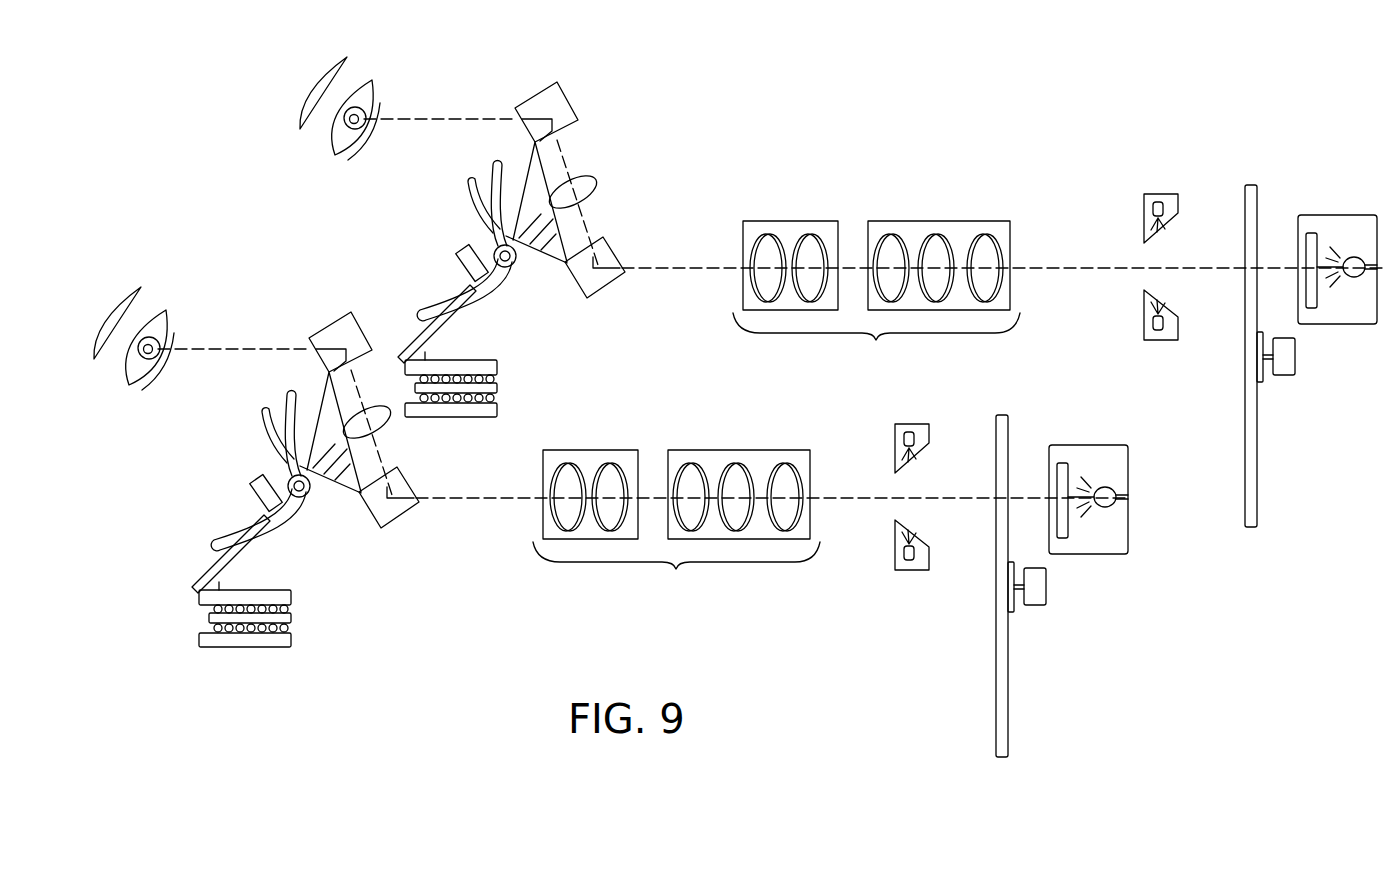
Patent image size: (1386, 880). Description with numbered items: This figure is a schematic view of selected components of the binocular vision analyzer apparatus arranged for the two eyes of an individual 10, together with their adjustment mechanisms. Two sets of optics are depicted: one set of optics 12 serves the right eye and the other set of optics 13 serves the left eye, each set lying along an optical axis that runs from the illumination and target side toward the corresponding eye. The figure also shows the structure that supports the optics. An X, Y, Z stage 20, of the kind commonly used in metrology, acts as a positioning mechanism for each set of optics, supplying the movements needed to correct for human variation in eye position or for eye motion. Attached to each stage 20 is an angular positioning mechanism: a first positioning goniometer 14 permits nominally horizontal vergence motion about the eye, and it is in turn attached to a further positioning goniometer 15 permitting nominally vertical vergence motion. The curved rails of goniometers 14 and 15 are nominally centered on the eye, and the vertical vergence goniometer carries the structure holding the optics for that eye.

The individual 10 is at (254, 238).
The set of optics 12 is at (676, 524).
The set of optics 13 is at (876, 294).
The first positioning goniometer 14 is at (445, 321).
The further positioning goniometer 15 is at (503, 275).
The X, Y, Z stage 20 is at (497, 387).